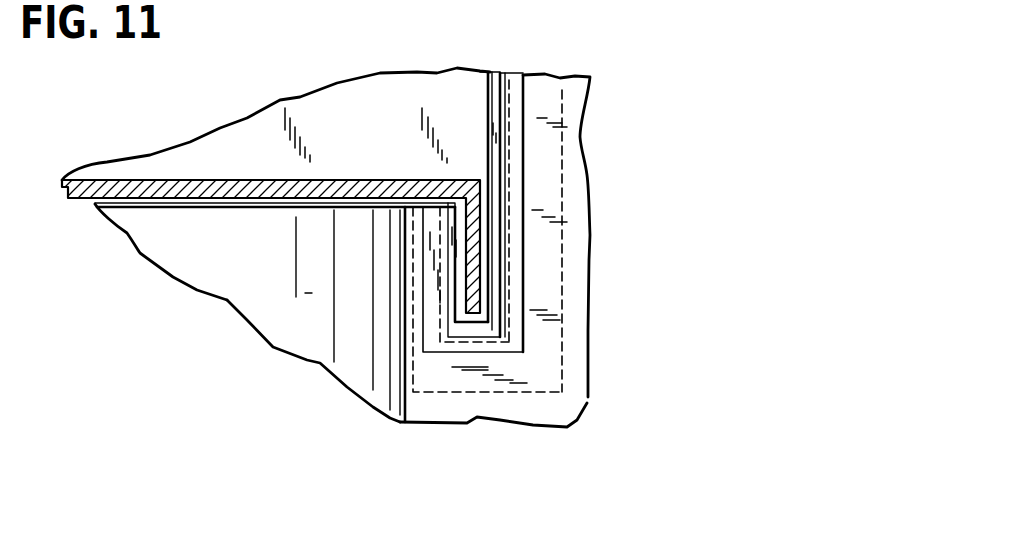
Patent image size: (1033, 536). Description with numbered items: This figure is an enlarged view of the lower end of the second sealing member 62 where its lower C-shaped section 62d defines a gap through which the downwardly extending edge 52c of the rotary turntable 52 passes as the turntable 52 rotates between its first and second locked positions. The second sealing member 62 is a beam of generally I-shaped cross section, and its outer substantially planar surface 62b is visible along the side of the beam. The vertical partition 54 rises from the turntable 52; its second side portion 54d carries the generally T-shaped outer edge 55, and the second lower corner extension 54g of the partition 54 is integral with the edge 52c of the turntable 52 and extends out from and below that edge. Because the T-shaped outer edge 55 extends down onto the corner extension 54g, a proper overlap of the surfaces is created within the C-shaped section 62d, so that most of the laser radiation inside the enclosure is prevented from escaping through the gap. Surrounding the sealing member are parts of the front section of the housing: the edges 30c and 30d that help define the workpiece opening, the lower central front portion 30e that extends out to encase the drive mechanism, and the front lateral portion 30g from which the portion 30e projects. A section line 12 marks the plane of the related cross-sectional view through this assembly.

The section line 12 is at (653, 290).
The lower edge 30c is at (523, 208).
The lower edge 30d is at (166, 207).
The lower central front portion 30e is at (243, 285).
The front lateral portion 30g is at (573, 349).
The turntable 52 is at (227, 190).
The downwardly extending edge 52c is at (470, 305).
The vertical partition 54 is at (332, 112).
The second side portion 54d is at (477, 99).
The second lower corner extension 54g is at (443, 342).
The T-shaped outer edge 55 is at (508, 104).
The second sealing member 62 is at (517, 143).
The outer substantially planar surface 62b is at (517, 170).
The lower C-shaped section 62d is at (512, 347).